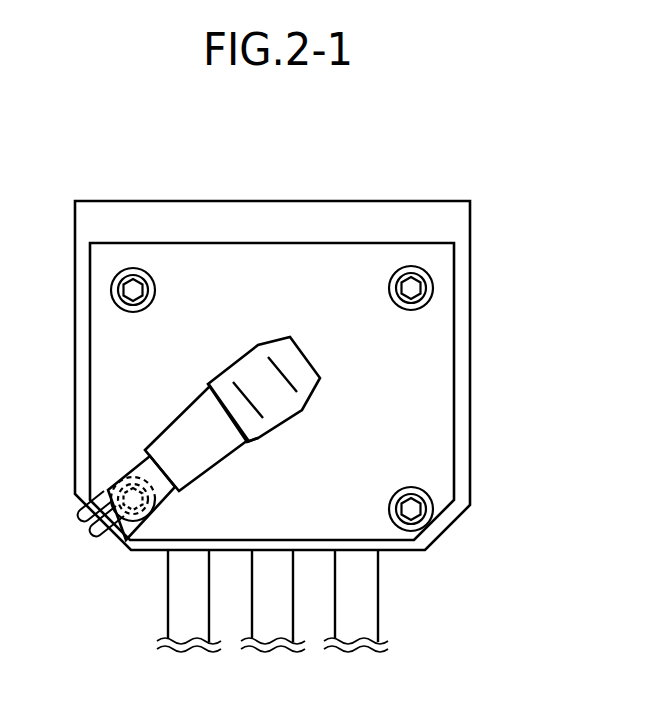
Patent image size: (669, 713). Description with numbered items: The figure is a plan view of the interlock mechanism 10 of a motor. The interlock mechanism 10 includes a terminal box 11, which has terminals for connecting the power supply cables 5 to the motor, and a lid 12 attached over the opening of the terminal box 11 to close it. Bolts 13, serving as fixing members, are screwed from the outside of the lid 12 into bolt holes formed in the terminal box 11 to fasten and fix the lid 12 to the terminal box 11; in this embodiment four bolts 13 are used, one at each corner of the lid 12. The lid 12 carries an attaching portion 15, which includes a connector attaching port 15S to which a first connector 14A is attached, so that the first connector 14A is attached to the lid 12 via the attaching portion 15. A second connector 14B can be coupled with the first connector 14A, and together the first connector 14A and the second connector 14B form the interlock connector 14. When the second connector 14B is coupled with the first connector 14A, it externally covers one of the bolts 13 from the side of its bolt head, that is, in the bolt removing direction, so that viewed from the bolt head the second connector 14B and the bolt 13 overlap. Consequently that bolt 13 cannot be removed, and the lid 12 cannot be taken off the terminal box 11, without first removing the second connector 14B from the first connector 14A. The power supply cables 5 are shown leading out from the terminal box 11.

The interlock mechanism 10 is at (493, 170).
The terminal box 11 is at (462, 222).
The lid 12 is at (432, 397).
The bolts 13 is at (111, 292).
The interlock connector 14 is at (163, 429).
The first connector 14A is at (175, 435).
The second connector 14B is at (140, 463).
The attaching portion 15 is at (280, 402).
The connector attaching port 15S is at (249, 446).
The power supply cables 5 is at (195, 588).